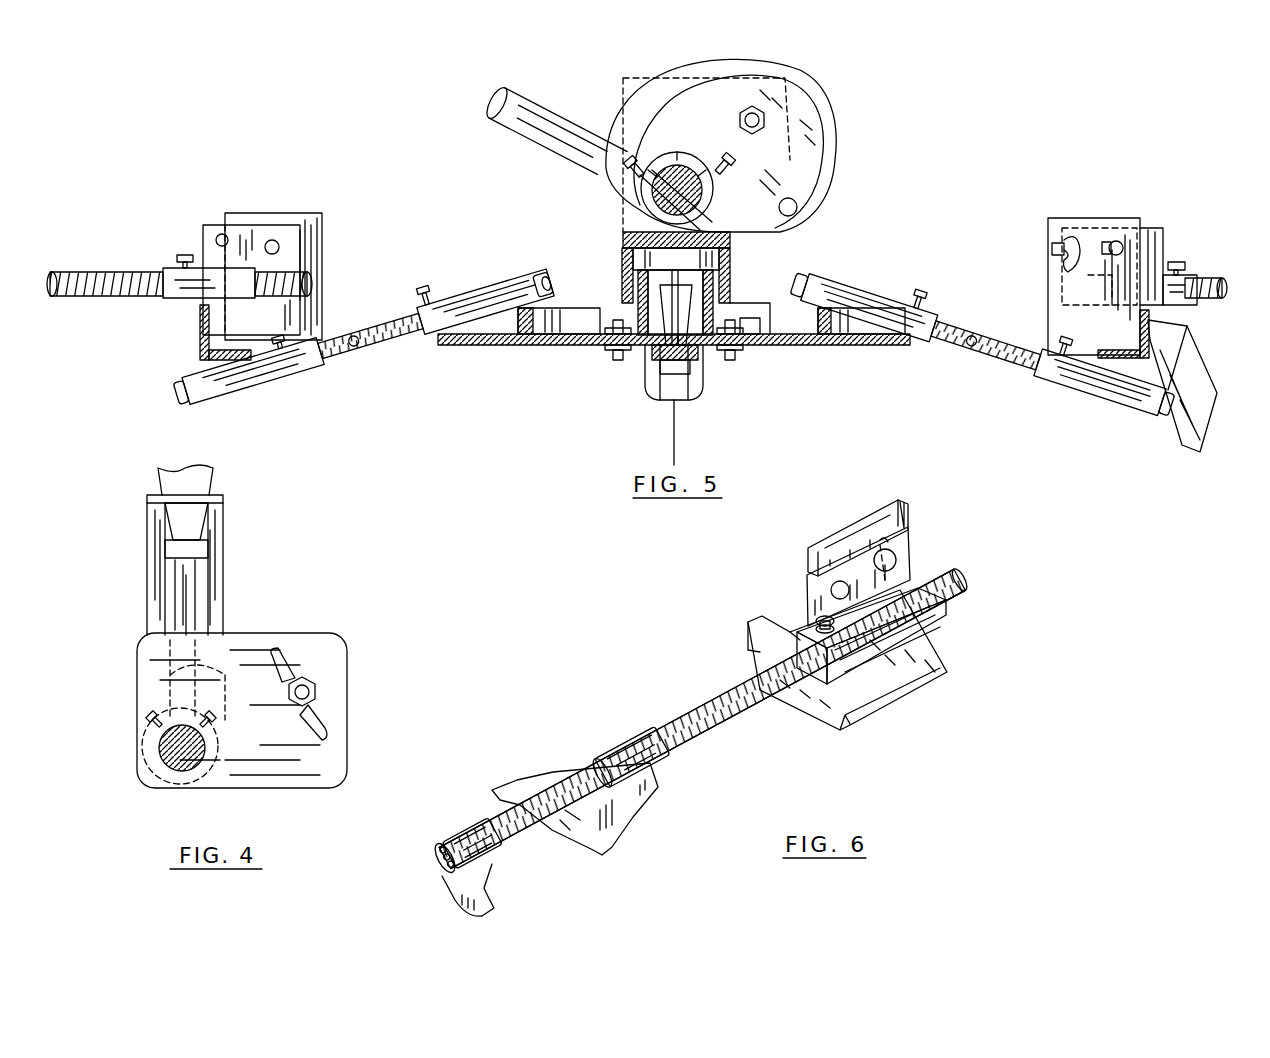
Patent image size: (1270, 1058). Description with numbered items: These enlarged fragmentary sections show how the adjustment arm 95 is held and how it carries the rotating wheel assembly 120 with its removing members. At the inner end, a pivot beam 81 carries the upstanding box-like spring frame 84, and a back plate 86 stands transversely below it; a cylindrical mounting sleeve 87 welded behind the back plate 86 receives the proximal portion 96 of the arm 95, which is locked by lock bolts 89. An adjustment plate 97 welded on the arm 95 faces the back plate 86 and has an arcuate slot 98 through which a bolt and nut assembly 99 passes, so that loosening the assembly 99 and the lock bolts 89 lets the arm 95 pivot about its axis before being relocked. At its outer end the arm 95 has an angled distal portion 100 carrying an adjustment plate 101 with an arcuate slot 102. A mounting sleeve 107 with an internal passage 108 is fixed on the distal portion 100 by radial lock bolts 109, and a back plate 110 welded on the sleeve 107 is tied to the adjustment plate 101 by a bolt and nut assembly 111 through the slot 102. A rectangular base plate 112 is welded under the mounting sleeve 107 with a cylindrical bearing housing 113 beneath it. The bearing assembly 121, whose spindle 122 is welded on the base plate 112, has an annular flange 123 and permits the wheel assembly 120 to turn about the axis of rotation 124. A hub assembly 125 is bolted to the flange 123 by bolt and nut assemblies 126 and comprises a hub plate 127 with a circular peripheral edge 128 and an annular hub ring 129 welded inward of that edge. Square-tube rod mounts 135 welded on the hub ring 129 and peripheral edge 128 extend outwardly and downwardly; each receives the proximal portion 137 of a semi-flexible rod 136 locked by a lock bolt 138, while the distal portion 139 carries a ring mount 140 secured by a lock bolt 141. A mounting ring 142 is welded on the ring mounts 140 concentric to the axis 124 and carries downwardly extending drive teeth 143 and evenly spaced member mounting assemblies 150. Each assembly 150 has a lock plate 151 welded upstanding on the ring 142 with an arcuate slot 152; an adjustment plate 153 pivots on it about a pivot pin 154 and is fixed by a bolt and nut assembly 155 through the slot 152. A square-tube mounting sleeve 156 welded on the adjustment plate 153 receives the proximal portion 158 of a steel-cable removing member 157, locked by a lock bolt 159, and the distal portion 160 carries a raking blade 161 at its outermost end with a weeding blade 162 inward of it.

In FIG. 4, the pivot beam 81 is at (178, 590).
In FIG. 4, the spring frame 84 is at (223, 552).
In FIG. 4, the back plate 86 is at (290, 665).
In FIG. 4, the mounting sleeve 87 is at (145, 745).
In FIG. 4, the lock bolts 89 is at (195, 678).
In FIG. 5, the adjustment arm 95 is at (572, 130).
In FIG. 4, the proximal portion 96 is at (182, 772).
In FIG. 4, the adjustment plate 97 is at (270, 749).
In FIG. 4, the arcuate slot 98 is at (318, 708).
In FIG. 4, the bolt and nut assembly 99 is at (308, 685).
In FIG. 5, the angled distal portion 100 is at (665, 190).
In FIG. 5, the adjustment plate 101 is at (810, 112).
In FIG. 5, the arcuate slot 102 is at (795, 205).
In FIG. 5, the mounting sleeve 107 is at (710, 200).
In FIG. 5, the internal passage 108 is at (678, 155).
In FIG. 5, the lock bolts 109 is at (635, 168).
In FIG. 5, the back plate 110 is at (715, 122).
In FIG. 5, the bolt and nut assembly 111 is at (748, 108).
In FIG. 5, the base plate 112 is at (622, 236).
In FIG. 5, the bearing housing 113 is at (622, 258).
In FIG. 5, the wheel assembly 120 is at (832, 268).
In FIG. 5, the bearing assembly 121 is at (713, 272).
In FIG. 5, the spacer 122 is at (700, 252).
In FIG. 5, the annular flange 123 is at (745, 326).
In FIG. 5, the axis of rotation 124 is at (672, 428).
In FIG. 5, the hub assembly 125 is at (538, 352).
In FIG. 5, the bolt and nut assemblies 126 is at (614, 352).
In FIG. 5, the hub plate 127 is at (845, 350).
In FIG. 5, the peripheral edge 128 is at (450, 338).
In FIG. 5, the hub ring 129 is at (768, 310).
In FIG. 5, the rod mounts 135 is at (497, 285).
In FIG. 5, the rod 136 is at (335, 340).
In FIG. 5, the proximal portion 137 is at (548, 275).
In FIG. 5, the lock bolt 138 is at (420, 282).
In FIG. 5, the distal portion 139 is at (180, 388).
In FIG. 5, the ring mount 140 is at (262, 378).
In FIG. 5, the lock bolt 141 is at (275, 338).
In FIG. 5, the mounting ring 142 is at (200, 330).
In FIG. 6, the mounting ring 142 is at (905, 672).
In FIG. 5, the drive teeth 143 is at (1192, 372).
In FIG. 5, the member mounting assemblies 150 is at (263, 195).
In FIG. 6, the member mounting assemblies 150 is at (835, 510).
In FIG. 5, the lock plate 151 is at (323, 238).
In FIG. 6, the lock plate 151 is at (908, 505).
In FIG. 6, the arcuate slot 152 is at (912, 531).
In FIG. 5, the adjustment plate 153 is at (250, 240).
In FIG. 6, the adjustment plate 153 is at (835, 570).
In FIG. 5, the pivot pin 154 is at (220, 233).
In FIG. 6, the pivot pin 154 is at (830, 590).
In FIG. 5, the bolt and nut assembly 155 is at (280, 248).
In FIG. 6, the bolt and nut assembly 155 is at (898, 562).
In FIG. 5, the mounting sleeve 156 is at (190, 290).
In FIG. 6, the mounting sleeve 156 is at (905, 628).
In FIG. 5, the removing member 157 is at (120, 275).
In FIG. 6, the removing member 157 is at (760, 690).
In FIG. 6, the proximal portion 158 is at (950, 582).
In FIG. 5, the lock bolt 159 is at (183, 256).
In FIG. 6, the lock bolt 159 is at (838, 618).
In FIG. 6, the distal portion 160 is at (585, 798).
In FIG. 6, the raking blade 161 is at (505, 885).
In FIG. 6, the weeding blade 162 is at (662, 786).